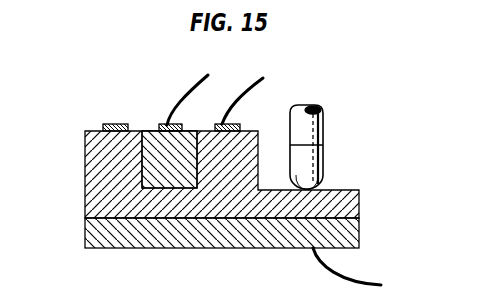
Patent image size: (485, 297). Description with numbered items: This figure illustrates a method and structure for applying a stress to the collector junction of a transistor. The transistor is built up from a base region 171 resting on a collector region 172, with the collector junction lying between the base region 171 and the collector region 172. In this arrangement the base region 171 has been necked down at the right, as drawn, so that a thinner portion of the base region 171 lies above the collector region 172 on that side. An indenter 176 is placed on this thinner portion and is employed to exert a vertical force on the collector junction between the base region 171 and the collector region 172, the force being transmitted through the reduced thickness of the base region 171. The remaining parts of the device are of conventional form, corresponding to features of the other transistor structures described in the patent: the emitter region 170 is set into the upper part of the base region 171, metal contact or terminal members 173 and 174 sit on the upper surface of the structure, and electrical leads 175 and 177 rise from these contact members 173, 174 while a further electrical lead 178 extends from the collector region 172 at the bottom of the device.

The emitter region 170 is at (192, 129).
The base region 171 is at (91, 176).
The collector region 172 is at (353, 228).
The metal contact member 173 is at (166, 124).
The metal contact member 174 is at (104, 123).
The electrical lead 175 is at (195, 85).
The indenter 176 is at (324, 133).
The electrical lead 177 is at (262, 80).
The electrical lead 178 is at (371, 281).